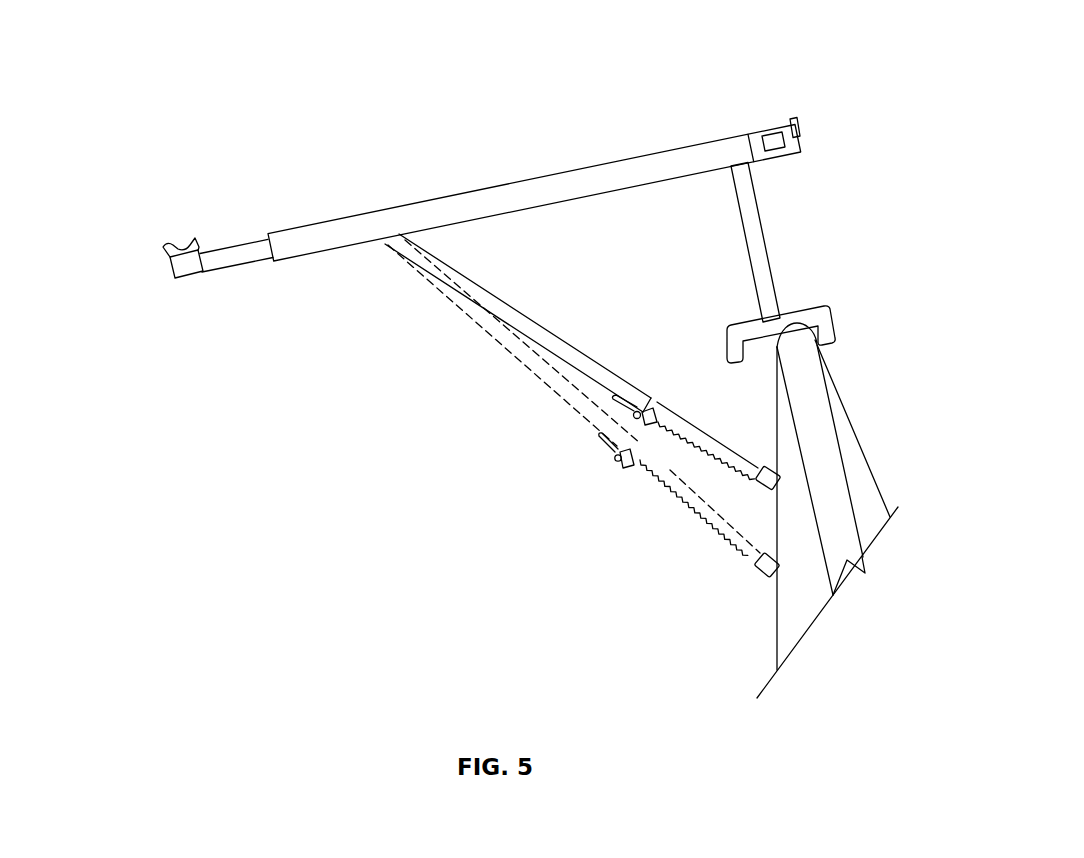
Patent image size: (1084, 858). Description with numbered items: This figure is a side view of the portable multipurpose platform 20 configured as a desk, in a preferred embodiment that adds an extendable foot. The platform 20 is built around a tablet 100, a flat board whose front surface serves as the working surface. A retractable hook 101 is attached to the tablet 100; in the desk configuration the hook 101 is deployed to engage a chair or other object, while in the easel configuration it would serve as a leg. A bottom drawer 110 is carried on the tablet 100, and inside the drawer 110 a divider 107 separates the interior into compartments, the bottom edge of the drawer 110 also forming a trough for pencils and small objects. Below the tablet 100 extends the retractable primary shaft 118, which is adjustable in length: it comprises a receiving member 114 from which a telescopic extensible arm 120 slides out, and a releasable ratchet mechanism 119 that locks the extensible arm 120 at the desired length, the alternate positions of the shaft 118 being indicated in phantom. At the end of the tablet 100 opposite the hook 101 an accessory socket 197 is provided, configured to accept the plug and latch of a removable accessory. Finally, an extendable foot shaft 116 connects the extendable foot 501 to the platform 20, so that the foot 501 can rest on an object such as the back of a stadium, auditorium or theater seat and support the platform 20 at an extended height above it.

The multipurpose platform 20 is at (238, 128).
The tablet 100 is at (503, 184).
The retractable hook 101 is at (793, 118).
The divider 107 is at (237, 264).
The bottom drawer 110 is at (197, 240).
The receiving member 114 is at (517, 362).
The extendable foot shaft 116 is at (765, 242).
The retractable primary shaft 118 is at (557, 400).
The releasable ratchet mechanism 119 is at (613, 460).
The telescopic extensible arm 120 is at (717, 458).
The accessory socket 197 is at (762, 134).
The extendable foot 501 is at (836, 320).